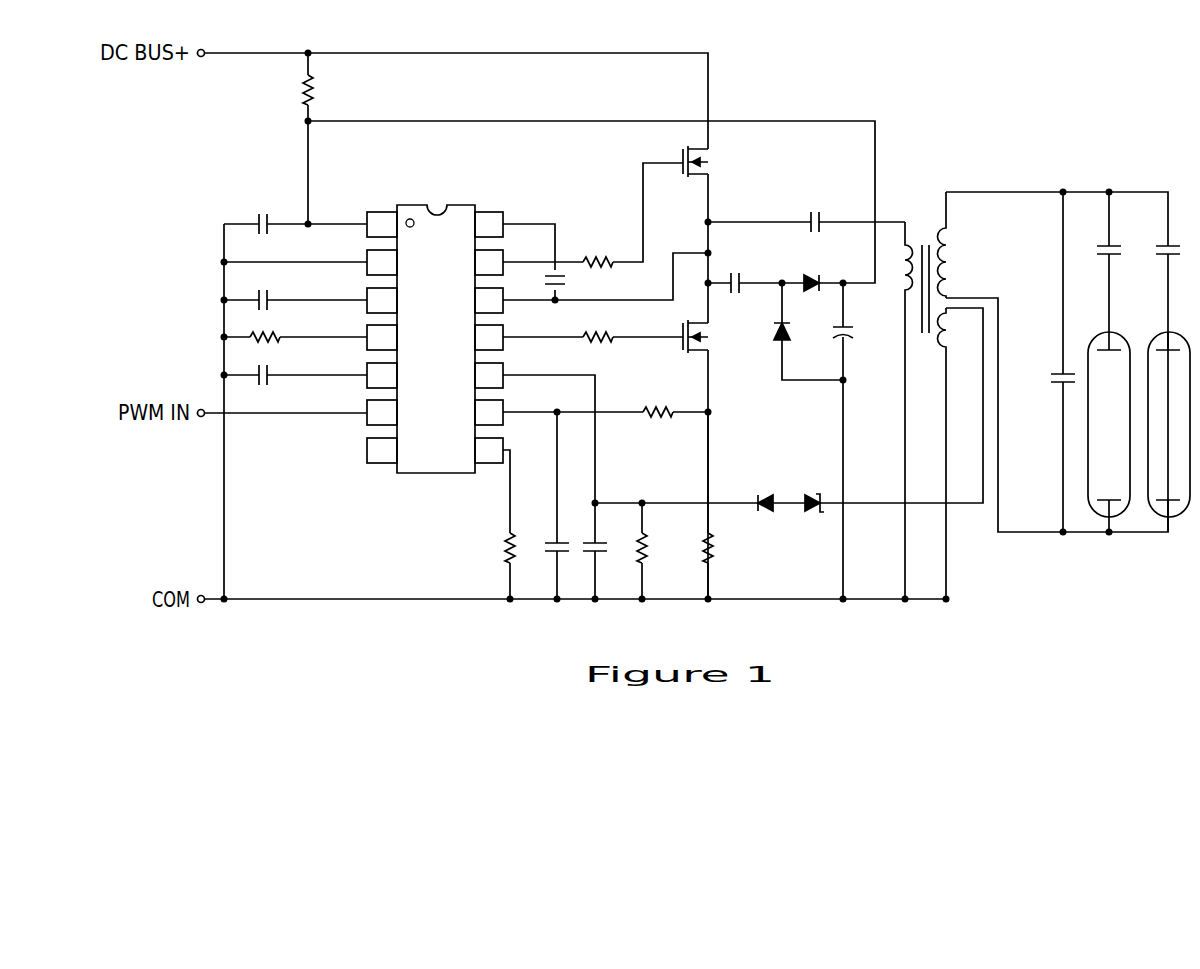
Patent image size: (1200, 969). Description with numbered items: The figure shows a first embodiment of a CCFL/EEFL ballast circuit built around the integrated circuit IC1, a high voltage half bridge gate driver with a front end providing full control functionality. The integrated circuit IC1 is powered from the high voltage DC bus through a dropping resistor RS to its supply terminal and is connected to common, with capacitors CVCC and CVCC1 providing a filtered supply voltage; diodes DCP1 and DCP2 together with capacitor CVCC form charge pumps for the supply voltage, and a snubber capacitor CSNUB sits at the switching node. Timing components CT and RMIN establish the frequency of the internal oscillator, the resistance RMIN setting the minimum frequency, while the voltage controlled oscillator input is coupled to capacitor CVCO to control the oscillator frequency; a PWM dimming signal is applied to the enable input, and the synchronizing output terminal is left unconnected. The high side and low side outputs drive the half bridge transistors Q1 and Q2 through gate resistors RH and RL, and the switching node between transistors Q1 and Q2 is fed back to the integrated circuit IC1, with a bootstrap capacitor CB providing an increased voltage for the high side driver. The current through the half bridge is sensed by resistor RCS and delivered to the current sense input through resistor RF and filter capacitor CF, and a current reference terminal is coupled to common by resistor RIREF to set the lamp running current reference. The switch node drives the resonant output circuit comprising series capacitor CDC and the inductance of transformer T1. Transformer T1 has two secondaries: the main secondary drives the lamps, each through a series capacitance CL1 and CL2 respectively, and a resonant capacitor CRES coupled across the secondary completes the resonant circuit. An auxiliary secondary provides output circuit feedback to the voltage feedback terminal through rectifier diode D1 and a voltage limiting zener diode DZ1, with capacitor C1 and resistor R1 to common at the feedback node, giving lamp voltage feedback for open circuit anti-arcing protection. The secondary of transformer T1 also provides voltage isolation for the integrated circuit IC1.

The dropping resistor RS is at (329, 138).
The capacitor CVCC1 is at (295, 210).
The timing capacitor CT is at (295, 287).
The timing resistor RMIN is at (295, 327).
The VCO capacitor CVCO is at (295, 368).
The integrated circuit IC1 is at (430, 327).
The high side gate resistor RH is at (593, 215).
The bootstrap capacitor CB is at (572, 283).
The low side gate resistor RL is at (593, 323).
The current sense resistor RF is at (605, 398).
The half bridge transistor Q1 is at (709, 161).
The half bridge transistor Q2 is at (710, 336).
The snubber capacitor CSNUB is at (747, 270).
The series capacitor CDC is at (806, 209).
The charge pump diode DCP1 is at (814, 269).
The charge pump diode DCP2 is at (808, 331).
The VCC capacitor CVCC is at (865, 443).
The transformer T1 is at (933, 397).
The resonant capacitor CRES is at (1041, 362).
The series capacitance CL1 is at (1101, 362).
The series capacitance CL2 is at (1160, 377).
The rectifier diode D1 is at (764, 488).
The voltage limiting zener diode DZ1 is at (812, 488).
The current reference resistor RIREF is at (481, 526).
The filter capacitor CF is at (549, 507).
The feedback capacitor C1 is at (564, 489).
The feedback resistor R1 is at (656, 551).
The current sense resistor RCS is at (729, 505).